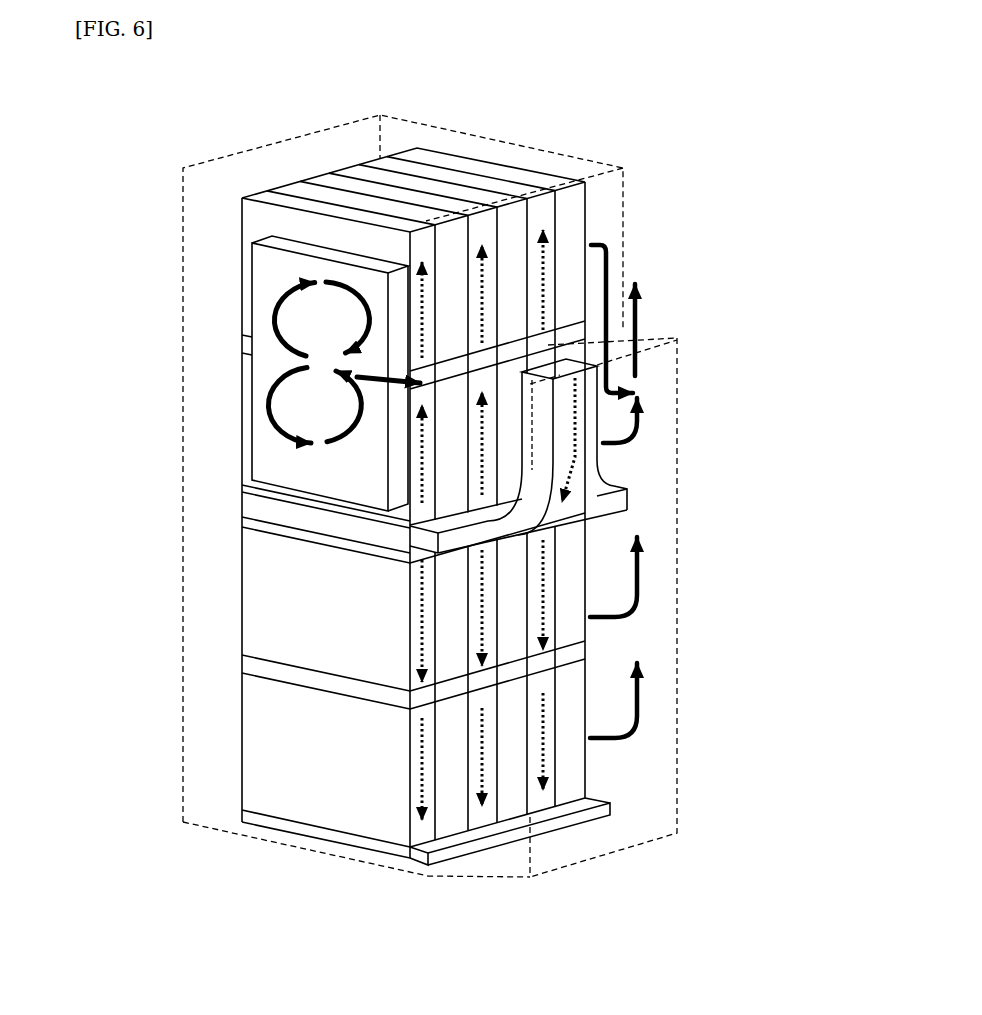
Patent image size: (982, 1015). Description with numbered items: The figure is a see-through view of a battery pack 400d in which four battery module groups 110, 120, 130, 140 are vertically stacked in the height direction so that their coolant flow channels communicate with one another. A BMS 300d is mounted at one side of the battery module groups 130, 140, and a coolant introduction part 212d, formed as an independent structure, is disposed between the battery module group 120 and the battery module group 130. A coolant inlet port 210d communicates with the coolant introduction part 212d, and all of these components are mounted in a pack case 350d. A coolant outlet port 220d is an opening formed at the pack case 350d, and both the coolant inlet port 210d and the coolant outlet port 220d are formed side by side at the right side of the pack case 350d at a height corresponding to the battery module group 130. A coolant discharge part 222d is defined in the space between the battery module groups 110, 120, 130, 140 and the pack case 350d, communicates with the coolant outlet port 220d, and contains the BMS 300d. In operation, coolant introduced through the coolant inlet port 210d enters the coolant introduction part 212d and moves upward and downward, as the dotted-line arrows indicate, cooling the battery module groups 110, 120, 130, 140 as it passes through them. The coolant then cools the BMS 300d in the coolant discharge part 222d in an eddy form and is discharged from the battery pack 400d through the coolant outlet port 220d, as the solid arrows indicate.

The battery pack 400d is at (166, 178).
The battery module group 140 is at (240, 278).
The BMS 300d is at (263, 383).
The battery module group 130 is at (240, 441).
The coolant introduction part 212d is at (270, 514).
The battery module group 120 is at (263, 598).
The battery module group 110 is at (263, 745).
The coolant inlet port 210d is at (563, 363).
The coolant outlet port 220d is at (650, 352).
The pack case 350d is at (681, 491).
The coolant discharge part 222d is at (605, 232).